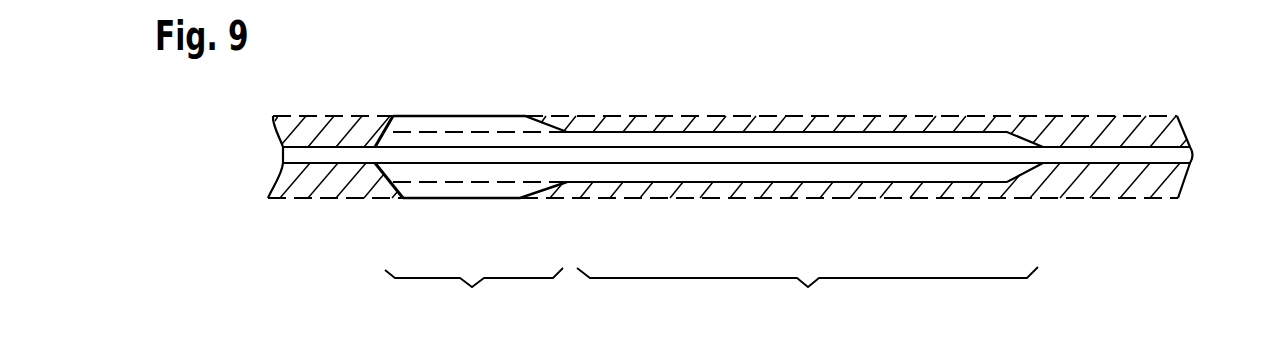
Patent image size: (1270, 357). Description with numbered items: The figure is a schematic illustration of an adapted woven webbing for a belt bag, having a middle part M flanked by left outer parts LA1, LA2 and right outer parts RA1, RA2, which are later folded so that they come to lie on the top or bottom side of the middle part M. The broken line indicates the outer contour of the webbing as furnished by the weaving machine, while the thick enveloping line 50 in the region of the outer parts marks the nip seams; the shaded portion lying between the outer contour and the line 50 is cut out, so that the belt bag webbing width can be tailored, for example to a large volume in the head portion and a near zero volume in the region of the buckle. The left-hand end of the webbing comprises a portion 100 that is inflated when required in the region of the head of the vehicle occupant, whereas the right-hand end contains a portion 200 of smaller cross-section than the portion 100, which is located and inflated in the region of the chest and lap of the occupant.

The enveloping line 50 is at (836, 126).
The middle part M is at (1080, 155).
The left outer part LA1 is at (470, 117).
The left outer part LA2 is at (650, 127).
The right outer part RA1 is at (449, 188).
The right outer part RA2 is at (697, 172).
The portion 100 is at (474, 294).
The portion 200 is at (807, 294).